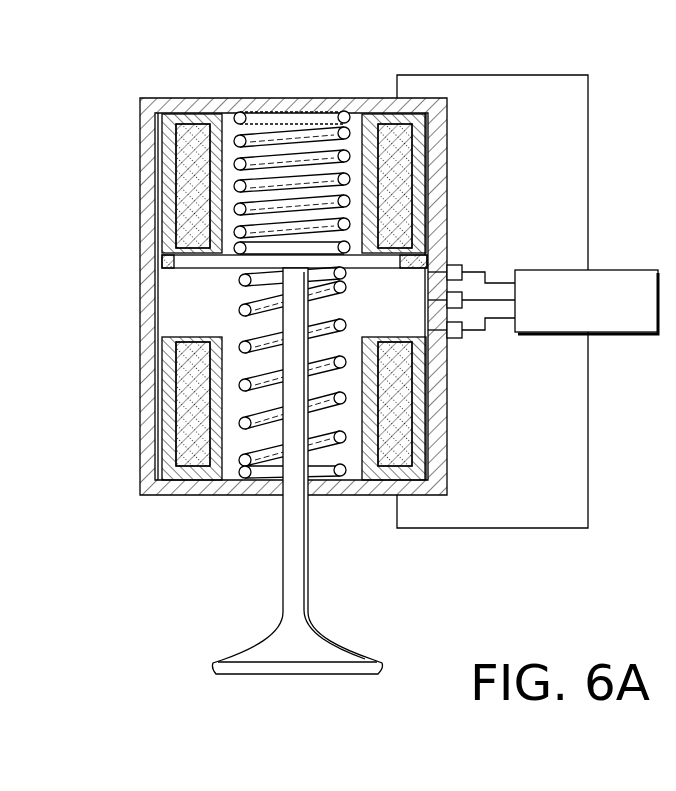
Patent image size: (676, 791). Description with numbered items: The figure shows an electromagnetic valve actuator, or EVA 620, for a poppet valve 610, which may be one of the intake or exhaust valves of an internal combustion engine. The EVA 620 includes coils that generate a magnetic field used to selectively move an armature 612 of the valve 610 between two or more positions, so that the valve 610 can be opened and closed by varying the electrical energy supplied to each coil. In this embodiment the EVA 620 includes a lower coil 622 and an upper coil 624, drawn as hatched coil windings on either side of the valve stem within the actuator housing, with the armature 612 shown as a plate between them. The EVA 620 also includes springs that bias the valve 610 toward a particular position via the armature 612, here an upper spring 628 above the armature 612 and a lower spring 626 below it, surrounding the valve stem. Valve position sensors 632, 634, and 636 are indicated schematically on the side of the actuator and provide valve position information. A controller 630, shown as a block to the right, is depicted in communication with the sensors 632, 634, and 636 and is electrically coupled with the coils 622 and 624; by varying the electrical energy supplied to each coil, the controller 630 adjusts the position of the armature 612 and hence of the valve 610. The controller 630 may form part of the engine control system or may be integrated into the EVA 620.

The poppet valve 610 is at (332, 645).
The armature 612 is at (158, 262).
The electromagnetic valve actuator 620 is at (140, 311).
The lower coil 622 is at (178, 415).
The upper coil 624 is at (160, 185).
The lower spring 626 is at (332, 447).
The upper spring 628 is at (278, 112).
The controller 630 is at (612, 335).
The valve position sensor 632 is at (453, 339).
The valve position sensor 634 is at (460, 291).
The valve position sensor 636 is at (452, 264).